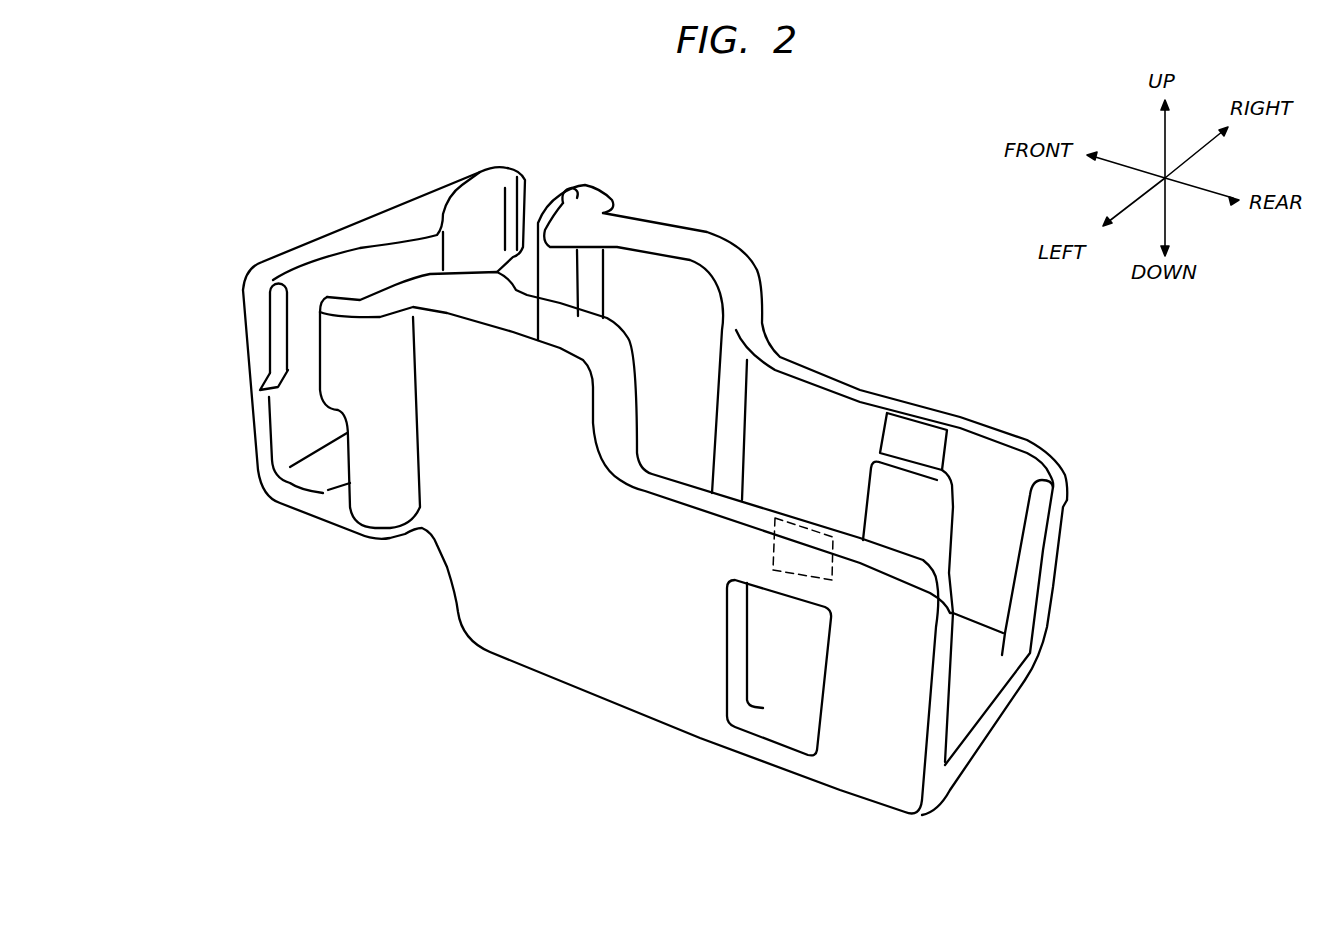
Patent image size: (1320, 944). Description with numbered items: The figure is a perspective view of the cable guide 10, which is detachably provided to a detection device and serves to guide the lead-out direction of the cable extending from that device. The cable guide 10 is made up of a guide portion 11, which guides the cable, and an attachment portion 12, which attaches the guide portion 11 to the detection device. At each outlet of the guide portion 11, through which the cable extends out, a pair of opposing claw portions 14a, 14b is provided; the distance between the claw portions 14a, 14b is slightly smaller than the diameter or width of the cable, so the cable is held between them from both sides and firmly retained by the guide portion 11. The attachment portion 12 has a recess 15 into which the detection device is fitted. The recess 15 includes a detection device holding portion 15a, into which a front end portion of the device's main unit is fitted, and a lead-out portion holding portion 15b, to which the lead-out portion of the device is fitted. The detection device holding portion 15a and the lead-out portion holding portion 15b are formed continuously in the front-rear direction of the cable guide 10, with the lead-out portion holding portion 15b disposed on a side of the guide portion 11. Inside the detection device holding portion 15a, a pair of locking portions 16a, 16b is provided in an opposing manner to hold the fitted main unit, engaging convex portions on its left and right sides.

The cable guide 10 is at (351, 171).
The guide portion 11 is at (488, 230).
The attachment portion 12 is at (903, 867).
The claw portion 14a is at (523, 197).
The claw portion 14b is at (545, 255).
The recess 15 is at (813, 452).
The detection device holding portion 15a is at (972, 497).
The lead-out portion holding portion 15b is at (652, 303).
The locking portion 16a is at (800, 580).
The locking portion 16b is at (906, 463).